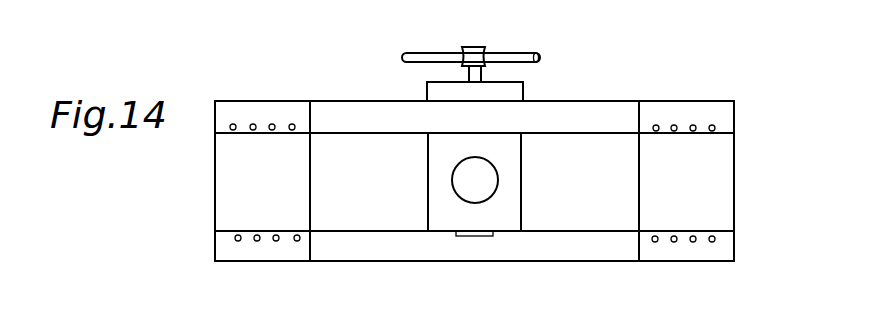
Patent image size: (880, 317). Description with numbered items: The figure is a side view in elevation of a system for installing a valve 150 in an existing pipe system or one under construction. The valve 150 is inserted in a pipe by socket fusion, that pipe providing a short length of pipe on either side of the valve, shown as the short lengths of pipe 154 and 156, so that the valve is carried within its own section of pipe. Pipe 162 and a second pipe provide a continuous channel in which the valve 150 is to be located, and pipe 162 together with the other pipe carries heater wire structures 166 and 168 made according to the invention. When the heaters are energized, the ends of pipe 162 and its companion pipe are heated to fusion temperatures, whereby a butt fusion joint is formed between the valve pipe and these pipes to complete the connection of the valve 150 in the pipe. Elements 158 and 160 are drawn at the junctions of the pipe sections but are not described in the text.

The valve 150 is at (522, 257).
The short length of pipe 154 is at (391, 258).
The short length of pipe 156 is at (523, 168).
The left partition plate 158 is at (311, 240).
The right partition plate 160 is at (639, 251).
The pipe 162 is at (248, 253).
The heater wire structure 166 is at (258, 235).
The heater wire structure 168 is at (657, 237).